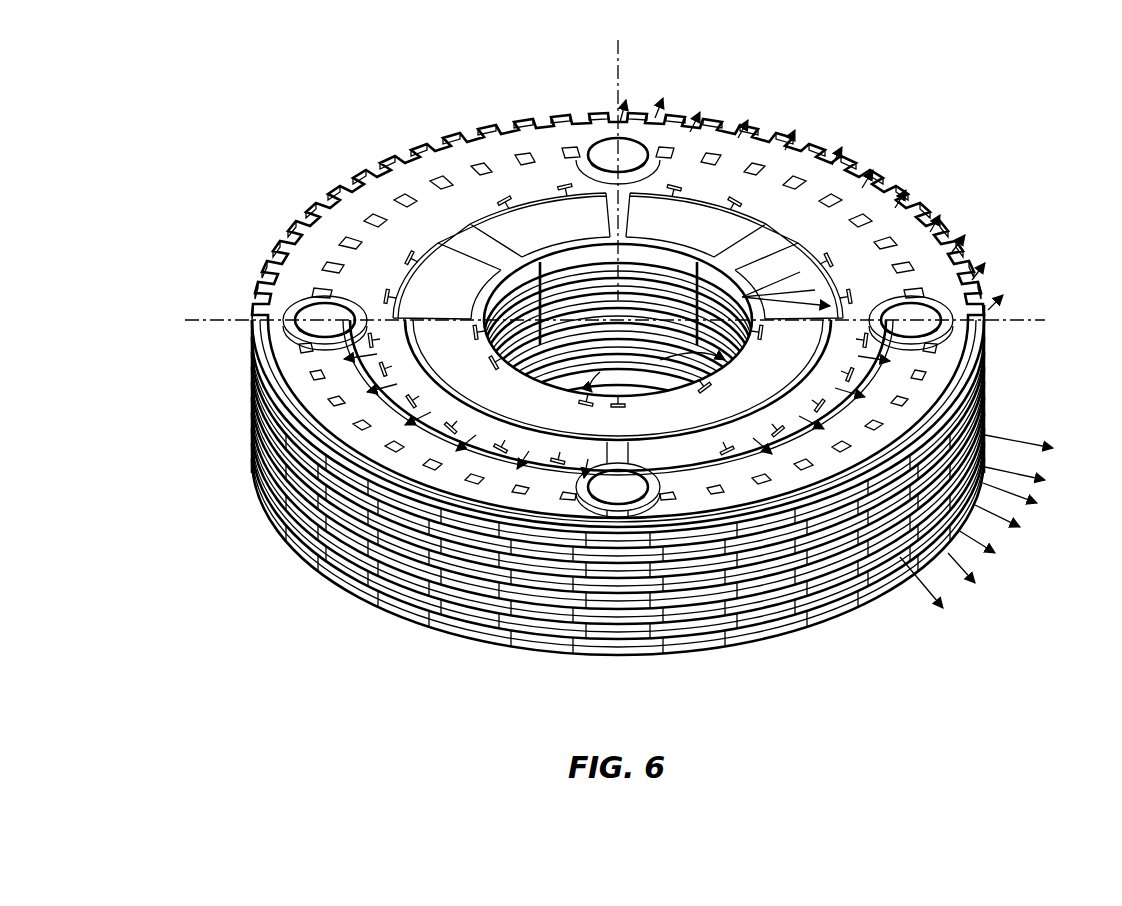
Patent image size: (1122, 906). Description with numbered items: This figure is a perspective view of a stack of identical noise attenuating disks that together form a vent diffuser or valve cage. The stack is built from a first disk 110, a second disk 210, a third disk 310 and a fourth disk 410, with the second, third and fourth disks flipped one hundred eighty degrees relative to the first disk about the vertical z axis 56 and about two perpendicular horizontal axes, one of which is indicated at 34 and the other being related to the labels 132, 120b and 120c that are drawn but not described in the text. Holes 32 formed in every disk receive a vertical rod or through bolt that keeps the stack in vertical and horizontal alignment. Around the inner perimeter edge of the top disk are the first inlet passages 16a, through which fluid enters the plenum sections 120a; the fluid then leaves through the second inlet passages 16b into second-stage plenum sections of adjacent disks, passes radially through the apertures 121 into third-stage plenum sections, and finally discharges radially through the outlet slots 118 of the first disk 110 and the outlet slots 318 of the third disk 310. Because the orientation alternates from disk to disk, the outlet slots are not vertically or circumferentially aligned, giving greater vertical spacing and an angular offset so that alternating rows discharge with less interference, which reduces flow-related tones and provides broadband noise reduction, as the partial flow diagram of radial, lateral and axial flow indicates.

The z axis 56 is at (622, 76).
The transverse axis 34 is at (230, 320).
The mounting holes 132 is at (600, 140).
The outlet slots 118 is at (370, 170).
The plenum sections 120a is at (445, 290).
The lower contact ring 120b is at (862, 378).
The lower slots 120c is at (900, 418).
The apertures 121 is at (785, 178).
The second inlet passages 16b is at (505, 222).
The first inlet passages 16a is at (712, 384).
The holes 32 is at (614, 468).
The first disk 110 is at (470, 520).
The second disk 210 is at (500, 535).
The third disk 310 is at (535, 548).
The fourth disk 410 is at (570, 565).
The outlet slots 318 is at (970, 585).